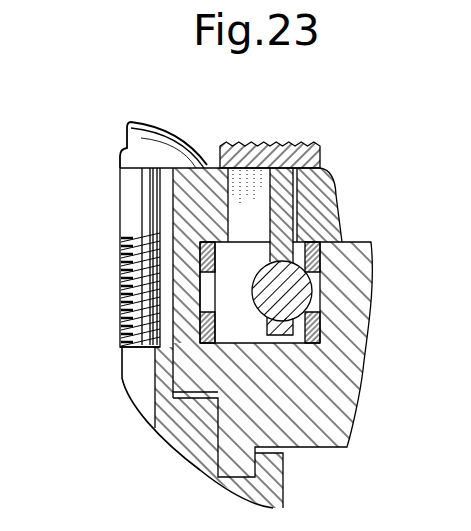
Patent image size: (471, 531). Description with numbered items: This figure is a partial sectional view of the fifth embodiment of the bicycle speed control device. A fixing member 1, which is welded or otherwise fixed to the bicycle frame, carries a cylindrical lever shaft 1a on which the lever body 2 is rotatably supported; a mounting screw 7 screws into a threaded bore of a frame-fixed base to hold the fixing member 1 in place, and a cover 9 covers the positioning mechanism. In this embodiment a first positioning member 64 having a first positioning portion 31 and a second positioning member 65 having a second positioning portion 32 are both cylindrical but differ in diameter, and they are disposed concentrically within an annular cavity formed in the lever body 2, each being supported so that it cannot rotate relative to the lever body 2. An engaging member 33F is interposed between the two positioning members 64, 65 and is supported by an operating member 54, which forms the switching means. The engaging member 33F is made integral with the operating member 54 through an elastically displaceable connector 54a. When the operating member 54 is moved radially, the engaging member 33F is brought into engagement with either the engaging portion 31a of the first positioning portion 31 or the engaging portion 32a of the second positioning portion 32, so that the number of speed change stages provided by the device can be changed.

The fixing member 1 is at (184, 426).
The cylindrical lever shaft 1a is at (157, 372).
The lever body 2 is at (340, 393).
The mounting screw 7 is at (130, 210).
The cover 9 is at (199, 176).
The first positioning portion 31 is at (209, 274).
The engaging portion 31a is at (207, 294).
The second positioning portion 32 is at (320, 278).
The engaging portion 32a is at (320, 303).
The engaging member 33F is at (312, 292).
The operating member 54 is at (320, 148).
The elastically displaceable connector 54a is at (300, 203).
The first positioning member 64 is at (208, 331).
The second positioning member 65 is at (318, 324).